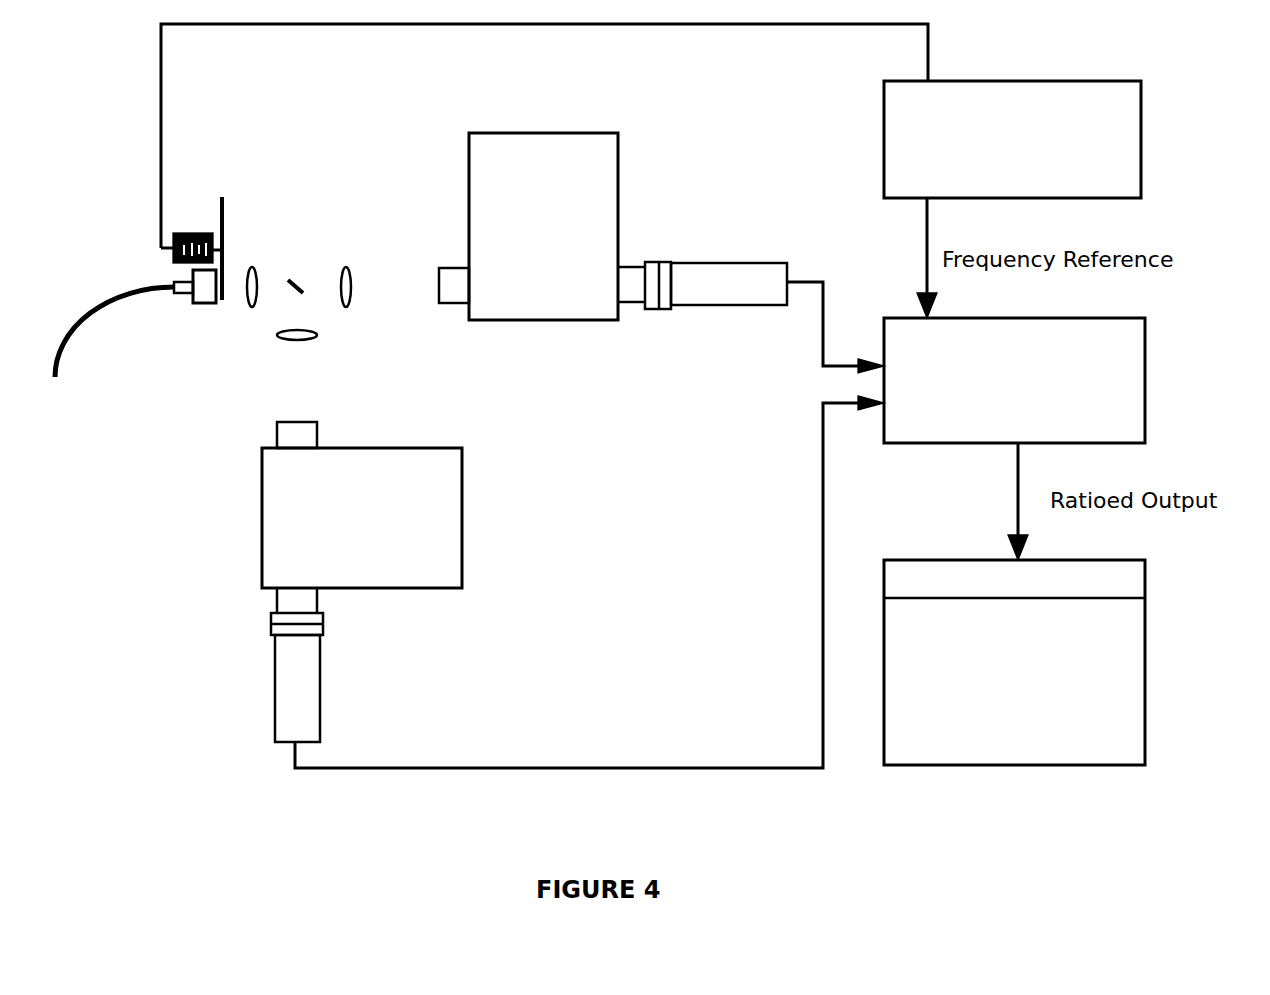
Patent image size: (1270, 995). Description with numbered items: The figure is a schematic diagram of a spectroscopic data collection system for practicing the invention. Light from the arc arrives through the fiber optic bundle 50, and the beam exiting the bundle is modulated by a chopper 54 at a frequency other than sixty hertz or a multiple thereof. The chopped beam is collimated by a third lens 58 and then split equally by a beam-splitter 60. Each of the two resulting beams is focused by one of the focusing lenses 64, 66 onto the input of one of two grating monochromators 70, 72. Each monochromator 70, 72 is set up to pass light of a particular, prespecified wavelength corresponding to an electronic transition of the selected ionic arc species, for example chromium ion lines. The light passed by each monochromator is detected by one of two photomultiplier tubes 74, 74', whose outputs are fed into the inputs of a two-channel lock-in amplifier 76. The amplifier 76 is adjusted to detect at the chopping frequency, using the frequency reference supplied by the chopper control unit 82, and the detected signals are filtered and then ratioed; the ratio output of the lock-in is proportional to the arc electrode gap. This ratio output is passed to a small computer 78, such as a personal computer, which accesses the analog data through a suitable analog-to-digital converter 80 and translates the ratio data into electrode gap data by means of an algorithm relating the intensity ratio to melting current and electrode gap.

The fiber optic bundle 50 is at (77, 325).
The chopper 54 is at (223, 210).
The third lens 58 is at (250, 307).
The beam-splitter 60 is at (297, 280).
The focusing lens 64 is at (307, 340).
The focusing lens 66 is at (353, 272).
The grating monochromator 70 is at (290, 524).
The grating monochromator 72 is at (572, 187).
The photomultiplier tube 74 is at (234, 677).
The photomultiplier tube 74' is at (716, 339).
The two-channel lock-in amplifier 76 is at (1089, 368).
The computer 78 is at (1089, 670).
The analog-to-digital converter 80 is at (1089, 578).
The chopper control unit 82 is at (1089, 137).